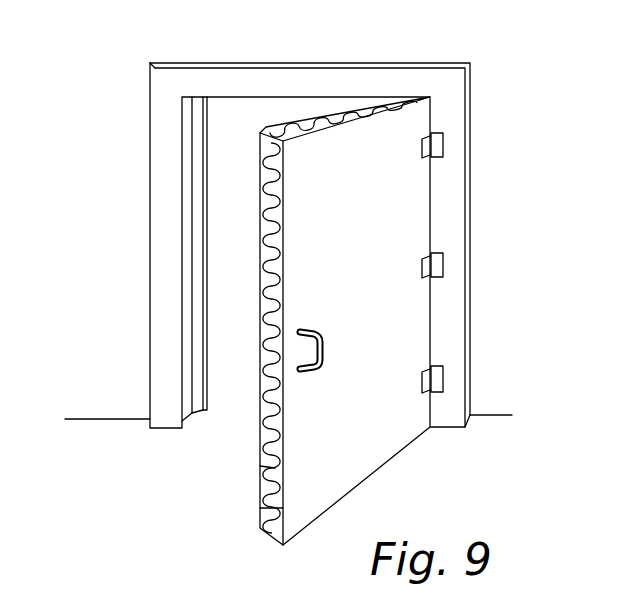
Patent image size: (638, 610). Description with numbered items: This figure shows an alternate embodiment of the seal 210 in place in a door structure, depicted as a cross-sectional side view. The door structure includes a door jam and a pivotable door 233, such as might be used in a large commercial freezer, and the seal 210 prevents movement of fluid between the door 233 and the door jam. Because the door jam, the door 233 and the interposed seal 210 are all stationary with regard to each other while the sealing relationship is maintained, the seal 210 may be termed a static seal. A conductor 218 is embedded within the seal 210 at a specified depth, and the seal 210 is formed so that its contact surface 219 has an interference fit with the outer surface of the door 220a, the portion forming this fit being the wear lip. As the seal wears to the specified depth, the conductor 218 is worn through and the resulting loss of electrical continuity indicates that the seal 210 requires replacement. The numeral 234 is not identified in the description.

The seal 210 is at (296, 123).
The conductor 218 is at (272, 238).
The contact surface 219 is at (188, 222).
The outer surface of the door 220a is at (260, 466).
The pivotable door 233 is at (360, 467).
The door frame 234 is at (158, 300).